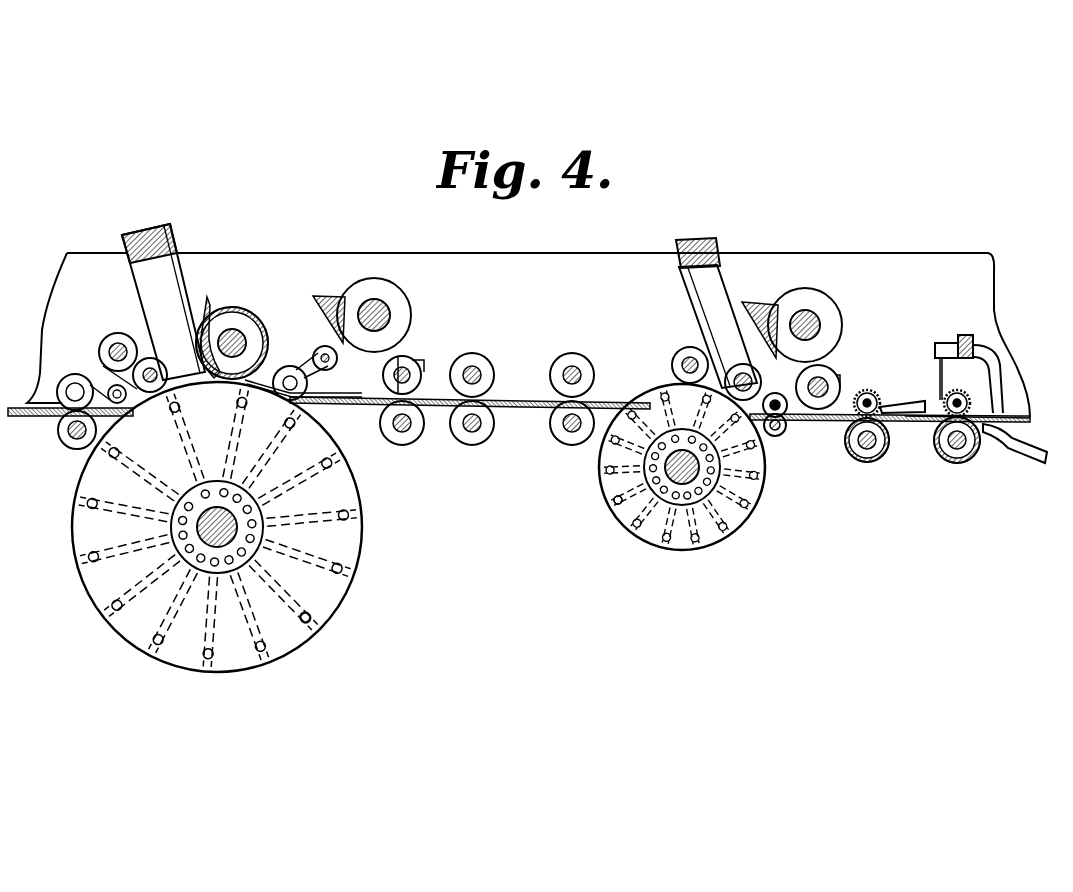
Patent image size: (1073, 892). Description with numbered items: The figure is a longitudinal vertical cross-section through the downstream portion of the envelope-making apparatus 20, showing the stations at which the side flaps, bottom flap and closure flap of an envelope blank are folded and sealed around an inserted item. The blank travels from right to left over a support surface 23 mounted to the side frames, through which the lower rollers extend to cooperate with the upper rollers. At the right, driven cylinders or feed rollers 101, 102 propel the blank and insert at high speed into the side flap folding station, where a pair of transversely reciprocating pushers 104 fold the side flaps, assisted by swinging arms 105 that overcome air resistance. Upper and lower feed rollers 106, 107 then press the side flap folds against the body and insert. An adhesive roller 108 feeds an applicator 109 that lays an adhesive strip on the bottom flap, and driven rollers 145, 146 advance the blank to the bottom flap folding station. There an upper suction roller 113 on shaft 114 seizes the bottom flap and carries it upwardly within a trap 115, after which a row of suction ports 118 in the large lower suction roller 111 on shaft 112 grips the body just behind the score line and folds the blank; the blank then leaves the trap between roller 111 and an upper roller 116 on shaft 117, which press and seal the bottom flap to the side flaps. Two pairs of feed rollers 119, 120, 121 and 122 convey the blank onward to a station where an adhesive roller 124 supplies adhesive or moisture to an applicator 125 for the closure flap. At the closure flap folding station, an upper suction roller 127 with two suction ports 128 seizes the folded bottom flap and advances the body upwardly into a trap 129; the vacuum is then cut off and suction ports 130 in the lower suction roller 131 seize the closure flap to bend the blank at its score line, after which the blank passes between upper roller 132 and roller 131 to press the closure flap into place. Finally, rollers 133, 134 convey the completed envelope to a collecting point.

The apparatus 20 is at (918, 282).
The support surface 23 is at (1028, 425).
The driven cylinder or feed roller 101 is at (967, 432).
The driven cylinder or feed roller 102 is at (960, 464).
The pusher 104 is at (892, 402).
The arm 105 is at (946, 394).
The upper feed roller 106 is at (864, 392).
The lower feed roller 107 is at (855, 460).
The adhesive roller 108 is at (841, 318).
The applicator 109 is at (828, 372).
The suction roller 111 is at (668, 471).
The shaft 112 is at (704, 470).
The upper suction roller 113 is at (736, 366).
The shaft 114 is at (746, 374).
The trap 115 is at (700, 276).
The upper roller 116 is at (686, 350).
The shaft 117 is at (683, 366).
The suction ports 118 is at (612, 506).
The feed roller 119 is at (571, 348).
The feed roller 120 is at (560, 445).
The feed roller 121 is at (481, 356).
The feed roller 122 is at (466, 445).
The adhesive roller 124 is at (412, 318).
The applicator 125 is at (406, 365).
The upper suction roller 127 is at (256, 320).
The suction ports 128 is at (206, 314).
The trap 129 is at (153, 281).
The suction ports 130 is at (312, 617).
The lower suction roller 131 is at (360, 549).
The upper roller 132 is at (150, 375).
The roller 133 is at (78, 374).
The roller 134 is at (60, 433).
The driven cylinder or feed roller 145 is at (788, 382).
The driven cylinder or feed roller 146 is at (786, 427).